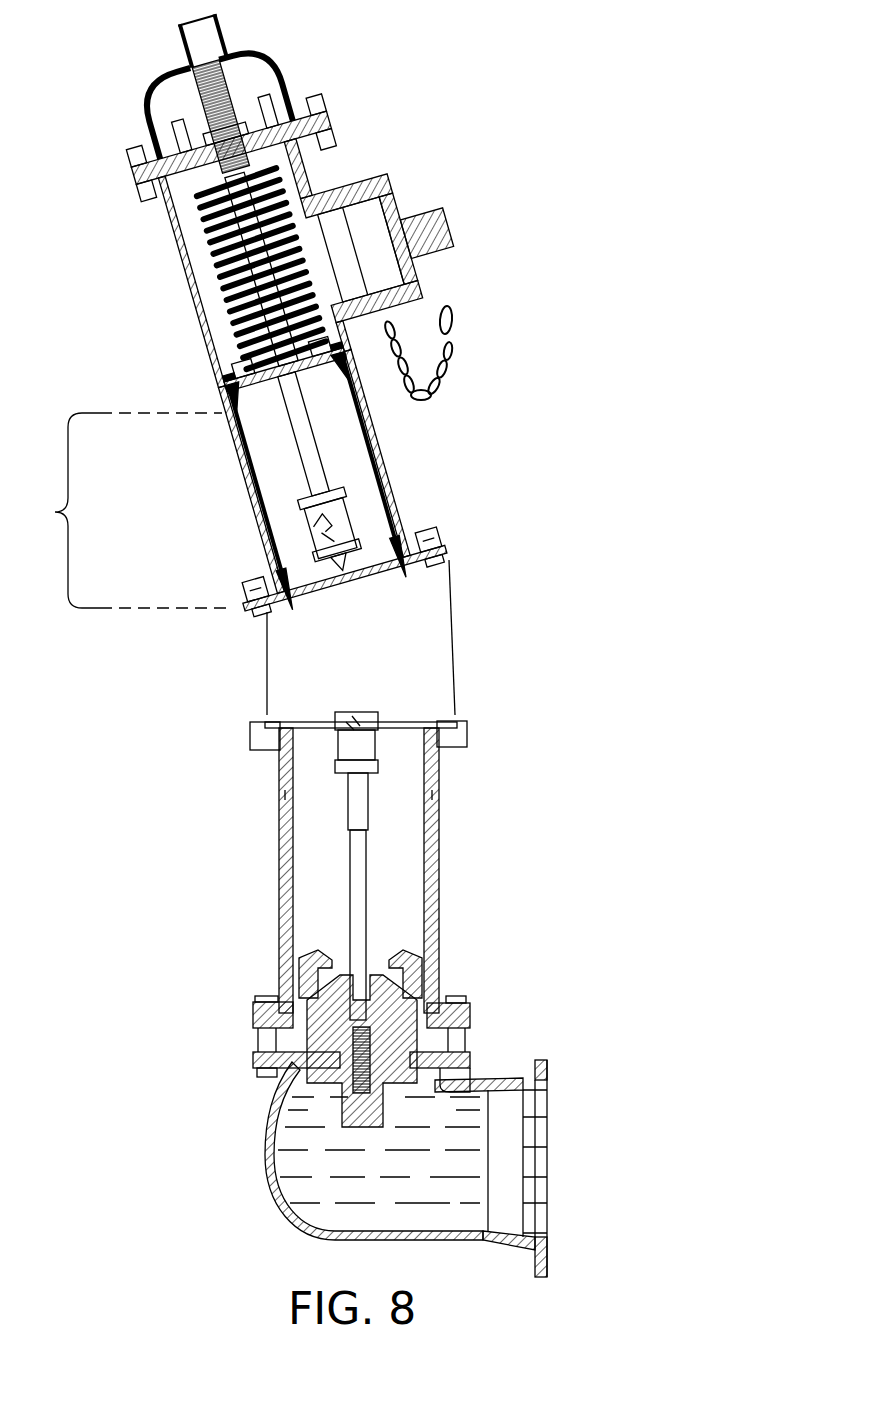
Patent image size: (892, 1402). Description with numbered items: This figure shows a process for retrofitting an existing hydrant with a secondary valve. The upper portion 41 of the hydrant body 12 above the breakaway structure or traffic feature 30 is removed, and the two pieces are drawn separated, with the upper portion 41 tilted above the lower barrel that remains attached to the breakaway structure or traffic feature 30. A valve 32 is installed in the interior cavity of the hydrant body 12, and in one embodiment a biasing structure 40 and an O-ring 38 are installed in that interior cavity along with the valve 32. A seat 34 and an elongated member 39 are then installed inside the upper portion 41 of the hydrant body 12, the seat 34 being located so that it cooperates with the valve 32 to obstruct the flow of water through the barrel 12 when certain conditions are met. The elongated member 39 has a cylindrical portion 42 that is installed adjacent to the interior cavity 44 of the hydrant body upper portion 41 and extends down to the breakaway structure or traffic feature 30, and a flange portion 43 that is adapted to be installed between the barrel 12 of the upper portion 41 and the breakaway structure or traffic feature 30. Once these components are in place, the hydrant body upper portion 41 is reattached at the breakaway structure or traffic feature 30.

The hydrant body 12 is at (258, 520).
The breakaway structure or traffic feature 30 is at (243, 594).
The valve 32 is at (335, 300).
The seat 34 is at (216, 412).
The O-ring 38 is at (222, 406).
The elongated member 39 is at (120, 510).
The biasing structure 40 is at (245, 298).
The upper portion 41 is at (510, 21).
The cylindrical portion 42 is at (380, 422).
The flange portion 43 is at (420, 558).
The interior cavity 44 is at (395, 468).